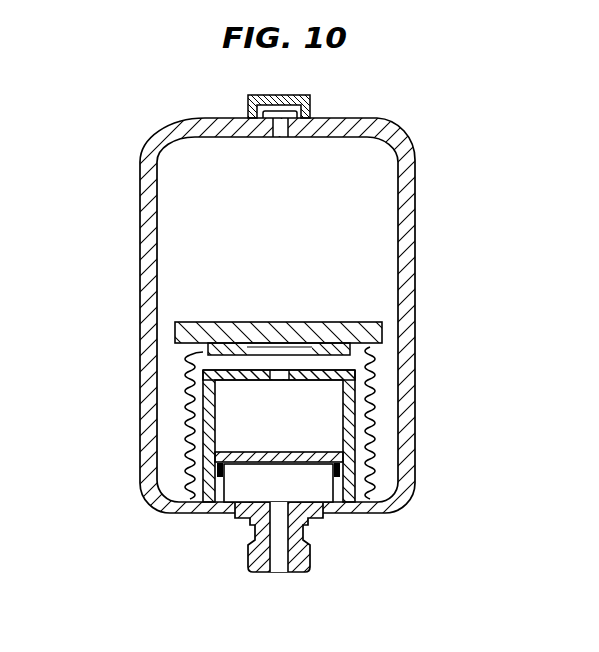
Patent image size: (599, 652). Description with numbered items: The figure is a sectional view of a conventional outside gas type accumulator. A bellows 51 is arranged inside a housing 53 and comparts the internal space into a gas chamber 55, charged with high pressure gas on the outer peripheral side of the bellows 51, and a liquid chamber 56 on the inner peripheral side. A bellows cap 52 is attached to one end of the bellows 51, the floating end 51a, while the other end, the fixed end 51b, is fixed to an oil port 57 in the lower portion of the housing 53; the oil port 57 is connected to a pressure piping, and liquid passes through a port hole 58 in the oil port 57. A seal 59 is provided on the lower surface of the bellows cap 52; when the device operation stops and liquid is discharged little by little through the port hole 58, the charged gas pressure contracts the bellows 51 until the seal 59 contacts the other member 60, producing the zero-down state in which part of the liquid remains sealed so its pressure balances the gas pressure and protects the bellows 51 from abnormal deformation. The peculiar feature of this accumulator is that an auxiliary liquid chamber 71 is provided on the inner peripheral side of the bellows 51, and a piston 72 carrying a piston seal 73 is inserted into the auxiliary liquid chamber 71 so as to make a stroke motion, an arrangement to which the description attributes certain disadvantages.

The bellows 51 is at (372, 403).
The floating end 51a is at (382, 330).
The fixed end 51b is at (375, 507).
The bellows cap 52 is at (335, 330).
The housing 53 is at (150, 180).
The gas chamber 55 is at (292, 237).
The liquid chamber 56 is at (200, 361).
The oil port 57 is at (333, 507).
The port hole 58 is at (280, 565).
The seal 59 is at (193, 352).
The other member 60 is at (215, 382).
The auxiliary liquid chamber 71 is at (237, 420).
The piston 72 is at (263, 466).
The piston seal 73 is at (218, 470).